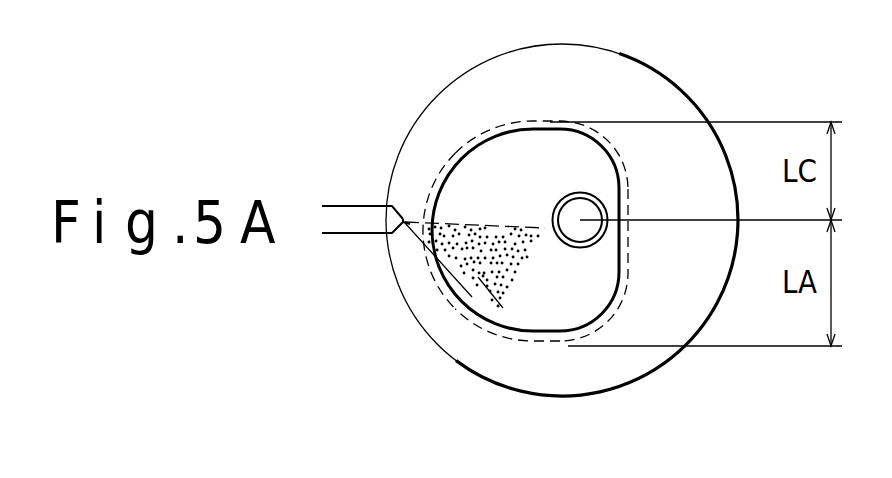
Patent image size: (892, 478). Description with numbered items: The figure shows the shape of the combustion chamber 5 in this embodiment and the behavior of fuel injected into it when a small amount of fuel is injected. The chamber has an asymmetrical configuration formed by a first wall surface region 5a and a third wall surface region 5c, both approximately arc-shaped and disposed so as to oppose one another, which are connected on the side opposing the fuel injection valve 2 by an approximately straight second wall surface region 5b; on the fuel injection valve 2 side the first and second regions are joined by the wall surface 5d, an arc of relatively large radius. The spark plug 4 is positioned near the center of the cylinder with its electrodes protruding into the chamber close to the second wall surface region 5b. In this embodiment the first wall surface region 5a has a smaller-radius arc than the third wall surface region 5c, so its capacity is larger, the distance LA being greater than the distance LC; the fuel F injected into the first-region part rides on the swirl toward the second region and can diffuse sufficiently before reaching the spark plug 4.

The fuel injection valve 2 is at (352, 235).
The spark plug 4 is at (594, 195).
The combustion chamber 5 is at (496, 157).
The first wall surface region 5a is at (553, 343).
The second wall surface region 5b is at (625, 290).
The third wall surface region 5c is at (527, 122).
The wall surface 5d is at (428, 190).
The fuel F is at (487, 275).